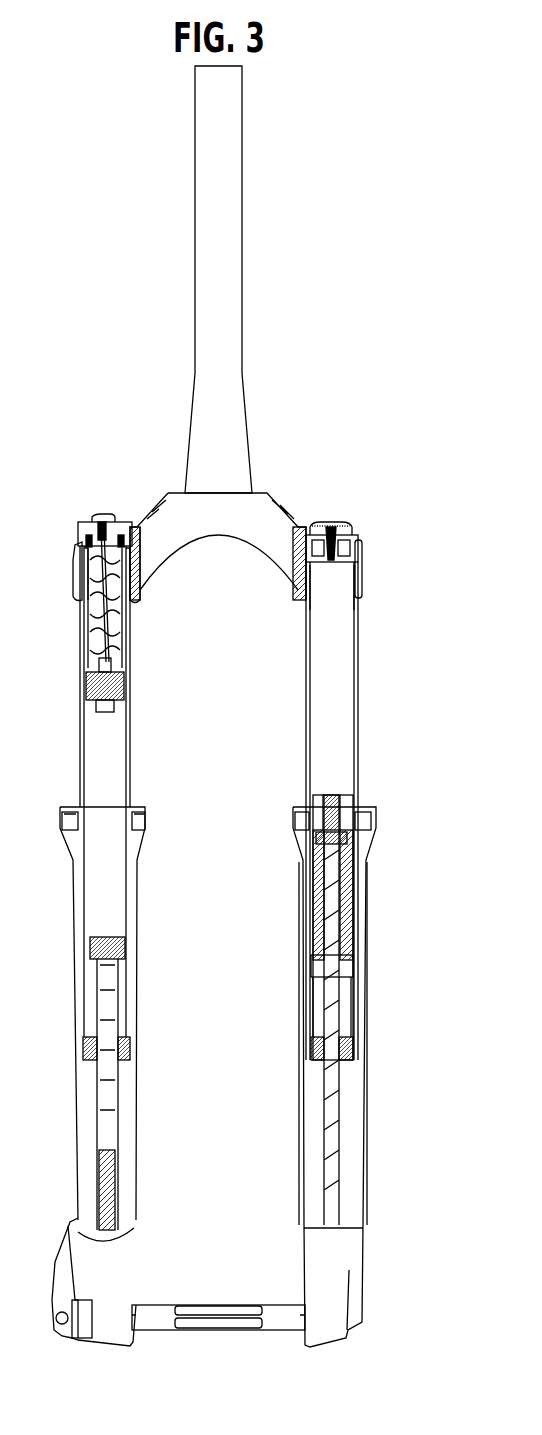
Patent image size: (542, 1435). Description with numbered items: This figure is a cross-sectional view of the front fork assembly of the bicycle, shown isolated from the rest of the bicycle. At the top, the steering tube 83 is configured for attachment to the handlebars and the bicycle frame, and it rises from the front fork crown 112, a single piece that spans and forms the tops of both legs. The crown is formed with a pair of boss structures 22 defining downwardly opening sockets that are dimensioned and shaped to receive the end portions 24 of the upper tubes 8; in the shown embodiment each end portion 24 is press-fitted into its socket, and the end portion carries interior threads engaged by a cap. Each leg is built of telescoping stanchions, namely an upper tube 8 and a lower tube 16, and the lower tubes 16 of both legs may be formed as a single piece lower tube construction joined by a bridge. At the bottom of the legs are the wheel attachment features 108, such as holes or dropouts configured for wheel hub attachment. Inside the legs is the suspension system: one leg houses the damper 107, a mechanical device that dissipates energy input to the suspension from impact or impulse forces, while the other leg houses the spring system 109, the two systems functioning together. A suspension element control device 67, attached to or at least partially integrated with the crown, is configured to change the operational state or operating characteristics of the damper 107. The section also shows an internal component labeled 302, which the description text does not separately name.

The steering tube 83 is at (244, 336).
The front fork crown 112 is at (272, 502).
The suspension element control device 67 is at (102, 508).
The boss structures 22 is at (71, 571).
The end portions 24 is at (128, 568).
The upper tube 8 is at (358, 680).
The damper 107 is at (74, 718).
The damper cartridge 302 is at (364, 937).
The spring system 109 is at (367, 1000).
The lower tube 16 is at (364, 1120).
The wheel attachment features 108 is at (100, 1333).